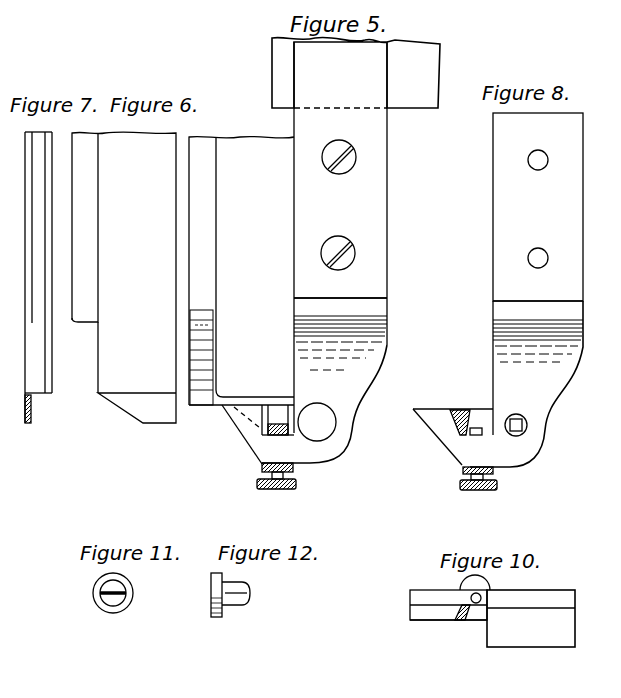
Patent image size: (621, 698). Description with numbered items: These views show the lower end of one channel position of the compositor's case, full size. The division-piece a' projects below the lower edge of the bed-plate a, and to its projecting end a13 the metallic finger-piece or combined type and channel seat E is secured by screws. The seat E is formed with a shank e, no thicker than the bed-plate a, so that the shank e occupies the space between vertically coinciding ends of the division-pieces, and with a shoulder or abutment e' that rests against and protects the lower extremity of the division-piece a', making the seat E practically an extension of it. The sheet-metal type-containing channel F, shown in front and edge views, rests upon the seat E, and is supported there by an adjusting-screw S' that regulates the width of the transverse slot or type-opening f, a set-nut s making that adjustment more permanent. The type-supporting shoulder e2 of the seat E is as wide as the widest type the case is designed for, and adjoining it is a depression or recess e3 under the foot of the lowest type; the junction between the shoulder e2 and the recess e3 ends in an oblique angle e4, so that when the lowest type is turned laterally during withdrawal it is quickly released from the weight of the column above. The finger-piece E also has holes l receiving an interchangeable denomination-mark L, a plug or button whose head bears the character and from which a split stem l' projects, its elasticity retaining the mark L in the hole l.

In FIG. 5, the bed-plate a is at (356, 72).
In FIG. 5, the division-piece a' is at (340, 237).
In FIG. 5, the projecting end of division-piece a13 is at (342, 205).
In FIG. 8, the shank e is at (538, 207).
In FIG. 10, the shank e is at (531, 618).
In FIG. 5, the shoulder or abutment e' is at (340, 307).
In FIG. 8, the shoulder or abutment e' is at (538, 310).
In FIG. 10, the shoulder or abutment e' is at (531, 623).
In FIG. 8, the type-supporting shoulder e2 is at (453, 427).
In FIG. 10, the type-supporting shoulder e2 is at (448, 605).
In FIG. 8, the depression or recess e3 is at (479, 420).
In FIG. 10, the depression or recess e3 is at (468, 606).
In FIG. 8, the oblique angle e4 is at (460, 408).
In FIG. 10, the oblique angle e4 is at (458, 596).
In FIG. 5, the finger-piece or combined type and channel seat E is at (324, 389).
In FIG. 8, the finger-piece or combined type and channel seat E is at (526, 384).
In FIG. 10, the finger-piece or combined type and channel seat E is at (449, 646).
In FIG. 5, the type-containing channel F is at (241, 271).
In FIG. 7, the type-containing channel F is at (38, 277).
In FIG. 6, the type-containing channel F is at (124, 277).
In FIG. 5, the transverse slot or type-opening f is at (232, 410).
In FIG. 5, the hole l is at (300, 416).
In FIG. 11, the hole l is at (106, 603).
In FIG. 12, the split stem l' is at (236, 581).
In FIG. 5, the denomination-mark L is at (317, 418).
In FIG. 8, the denomination-mark L is at (516, 417).
In FIG. 11, the denomination-mark L is at (113, 602).
In FIG. 12, the denomination-mark L is at (230, 606).
In FIG. 5, the set-nut s is at (260, 467).
In FIG. 8, the set-nut s is at (462, 470).
In FIG. 5, the thumb screw S' is at (276, 493).
In FIG. 8, the thumb screw S' is at (478, 495).